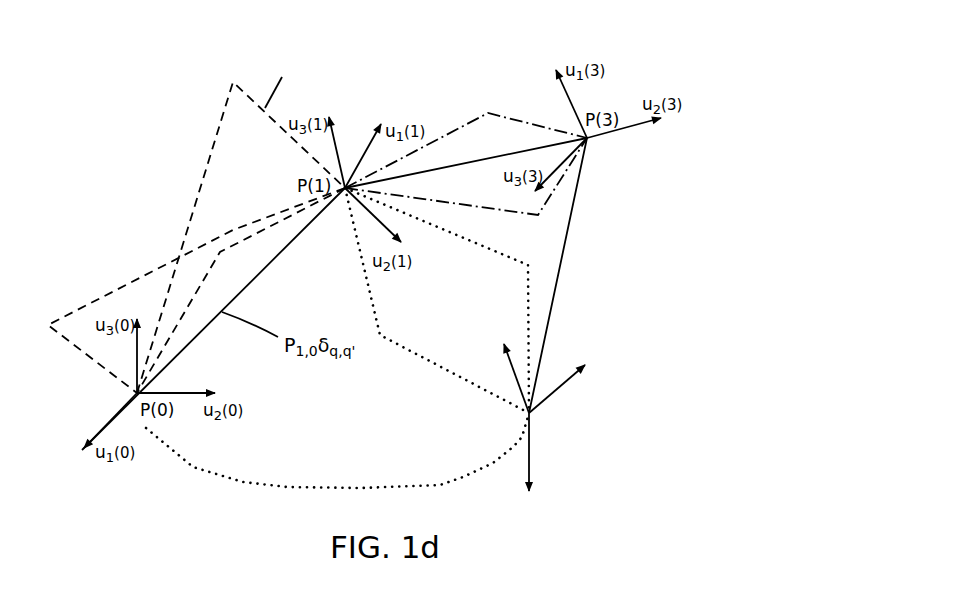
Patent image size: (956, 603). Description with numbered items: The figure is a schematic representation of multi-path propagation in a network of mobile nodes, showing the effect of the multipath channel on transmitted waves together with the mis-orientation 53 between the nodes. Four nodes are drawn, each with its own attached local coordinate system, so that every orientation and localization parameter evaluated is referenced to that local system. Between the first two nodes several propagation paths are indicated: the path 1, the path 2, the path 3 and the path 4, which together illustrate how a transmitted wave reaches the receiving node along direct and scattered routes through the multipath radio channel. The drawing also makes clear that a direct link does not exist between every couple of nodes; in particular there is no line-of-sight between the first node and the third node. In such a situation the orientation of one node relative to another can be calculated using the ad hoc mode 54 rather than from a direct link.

The propagation path Pth1 1 is at (213, 319).
The propagation path Pth2 2 is at (241, 290).
The propagation path Pth3 3 is at (196, 290).
The propagation path Pth4 4 is at (325, 206).
The mis-orientation 53 is at (529, 413).
The ad hoc mode 54 is at (357, 427).